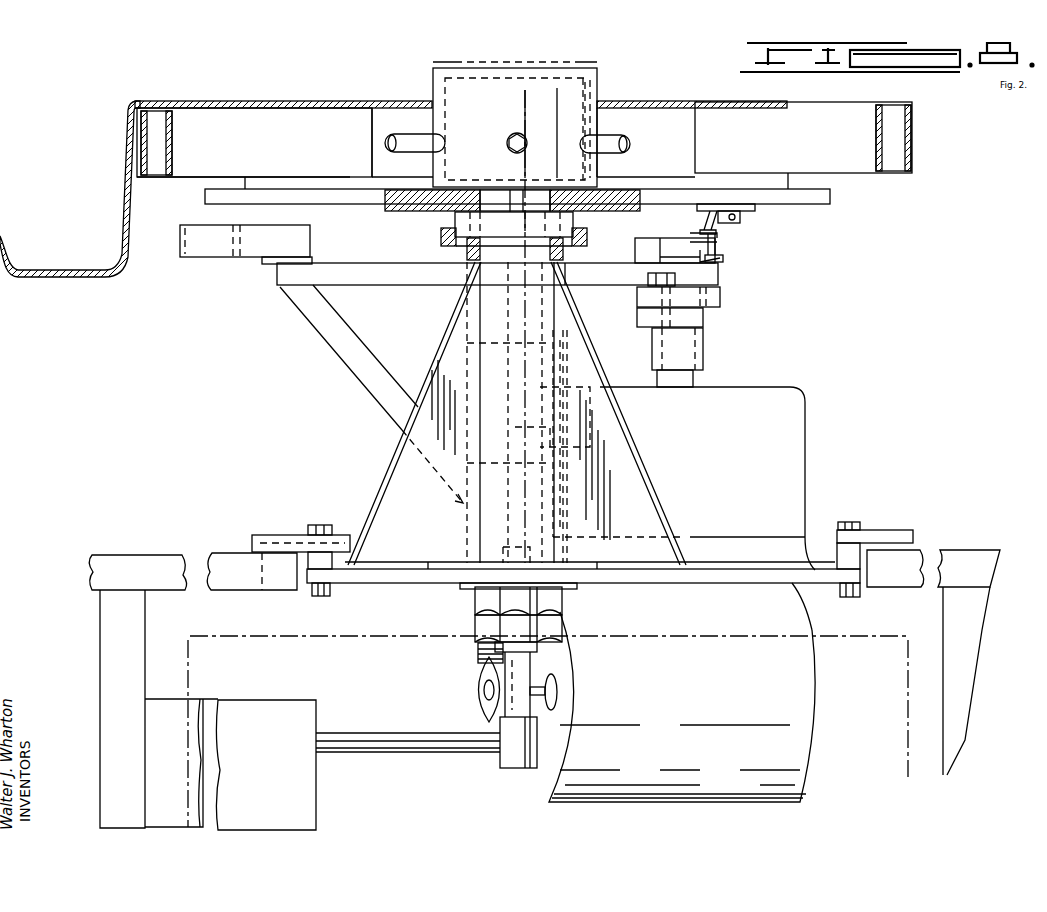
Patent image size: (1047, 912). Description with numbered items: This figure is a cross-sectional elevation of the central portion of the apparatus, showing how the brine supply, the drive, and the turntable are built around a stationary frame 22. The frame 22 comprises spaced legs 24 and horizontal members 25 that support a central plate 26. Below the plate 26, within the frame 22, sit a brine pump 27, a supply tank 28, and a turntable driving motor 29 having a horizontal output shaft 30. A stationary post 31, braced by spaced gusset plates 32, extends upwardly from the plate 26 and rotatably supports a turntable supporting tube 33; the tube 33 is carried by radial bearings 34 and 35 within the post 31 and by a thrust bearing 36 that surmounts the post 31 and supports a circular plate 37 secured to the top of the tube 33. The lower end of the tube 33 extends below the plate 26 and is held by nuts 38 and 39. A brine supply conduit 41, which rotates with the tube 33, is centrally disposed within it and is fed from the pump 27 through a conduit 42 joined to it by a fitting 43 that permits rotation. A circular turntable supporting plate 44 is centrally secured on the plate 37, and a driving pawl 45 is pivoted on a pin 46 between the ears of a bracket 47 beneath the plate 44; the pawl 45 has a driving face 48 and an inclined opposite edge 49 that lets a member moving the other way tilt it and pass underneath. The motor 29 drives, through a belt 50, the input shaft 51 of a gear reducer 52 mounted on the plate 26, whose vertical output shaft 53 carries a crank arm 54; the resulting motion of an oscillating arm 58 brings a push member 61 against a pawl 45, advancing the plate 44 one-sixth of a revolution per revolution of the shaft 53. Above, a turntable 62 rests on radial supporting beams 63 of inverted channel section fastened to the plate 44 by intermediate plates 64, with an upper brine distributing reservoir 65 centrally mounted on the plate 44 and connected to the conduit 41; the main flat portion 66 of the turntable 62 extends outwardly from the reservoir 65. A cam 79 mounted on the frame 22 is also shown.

The stationary frame 22 is at (232, 552).
The legs 24 is at (135, 656).
The horizontal members 25 is at (126, 558).
The central plate 26 is at (332, 576).
The brine pump 27 is at (288, 704).
The supply tank 28 is at (270, 634).
The turntable driving motor 29 is at (785, 720).
The horizontal output shaft 30 is at (572, 692).
The stationary post 31 is at (466, 262).
The gusset plates 32 is at (419, 403).
The turntable supporting tube 33 is at (576, 243).
The radial bearing 34 is at (455, 506).
The radial bearing 35 is at (466, 248).
The thrust bearing 36 is at (460, 218).
The circular plate 37 is at (428, 207).
The nut 38 is at (475, 599).
The nut 39 is at (475, 625).
The brine supply conduit 41 is at (700, 692).
The conduit 42 is at (402, 752).
The fitting 43 is at (518, 764).
The turntable supporting plate 44 is at (828, 196).
The driving pawl 45 is at (725, 232).
The pin 46 is at (742, 216).
The bracket 47 is at (720, 258).
The face 48 is at (708, 238).
The edge 49 is at (728, 252).
The belt 50 is at (478, 653).
The input shaft 51 is at (580, 382).
The gear reducer 52 is at (790, 459).
The output shaft 53 is at (680, 353).
The crank arm 54 is at (700, 299).
The oscillating arm 58 is at (598, 272).
The push member 61 is at (718, 258).
The turntable 62 is at (694, 92).
The turntable supporting beams 63 is at (848, 116).
The intermediate plates 64 is at (290, 179).
The upper brine distributing reservoir 65 is at (548, 96).
The main flat portion 66 is at (265, 103).
The cam 79 is at (218, 246).